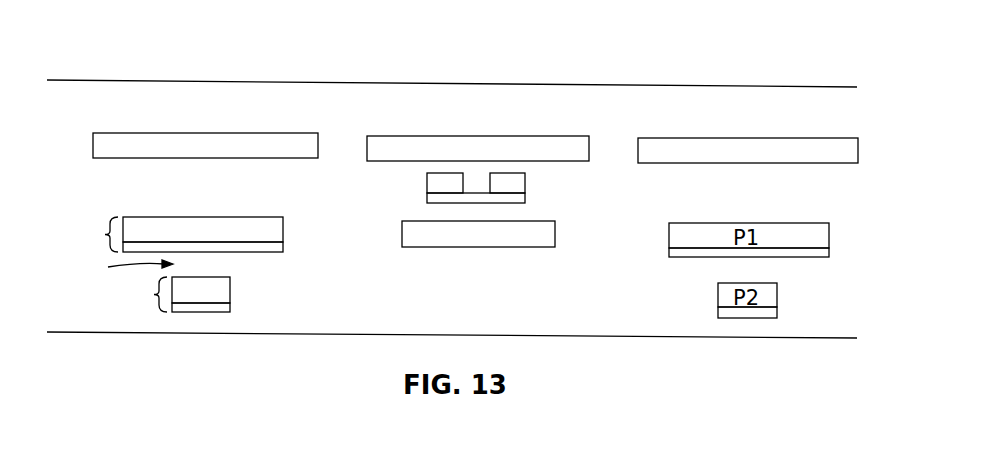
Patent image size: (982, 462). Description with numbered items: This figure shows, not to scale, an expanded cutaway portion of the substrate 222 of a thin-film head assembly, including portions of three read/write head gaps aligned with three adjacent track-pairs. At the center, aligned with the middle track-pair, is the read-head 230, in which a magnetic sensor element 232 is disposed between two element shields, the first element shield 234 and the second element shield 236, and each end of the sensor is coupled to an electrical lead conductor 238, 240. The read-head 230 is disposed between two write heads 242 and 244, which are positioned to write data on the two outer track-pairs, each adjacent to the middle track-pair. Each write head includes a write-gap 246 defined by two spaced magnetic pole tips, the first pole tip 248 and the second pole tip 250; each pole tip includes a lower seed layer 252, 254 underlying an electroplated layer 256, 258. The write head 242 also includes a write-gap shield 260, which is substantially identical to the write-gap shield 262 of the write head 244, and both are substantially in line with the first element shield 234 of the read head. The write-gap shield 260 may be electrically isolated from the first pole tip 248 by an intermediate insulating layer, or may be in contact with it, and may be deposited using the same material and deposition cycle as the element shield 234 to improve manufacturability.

The substrate 222 is at (142, 80).
The read-head 230 is at (491, 175).
The magnetic sensor element 232 is at (525, 198).
The element S1 shield 234 is at (410, 142).
The element S2 shield 236 is at (520, 243).
The electrical lead conductor 238 is at (427, 183).
The electrical lead conductor 240 is at (522, 182).
The write head 242 is at (205, 102).
The write head 244 is at (736, 109).
The write-gap 246 is at (119, 270).
The magnetic pole P1 tip 248 is at (213, 221).
The magnetic pole P2 tip 250 is at (209, 326).
The lower seed layer 252 is at (205, 313).
The lower seed layer 254 is at (283, 247).
The electroplated layer 256 is at (253, 228).
The electroplated layer 258 is at (231, 286).
The write-gap S1 shield 260 is at (128, 133).
The write-gap S1 shield 262 is at (700, 138).